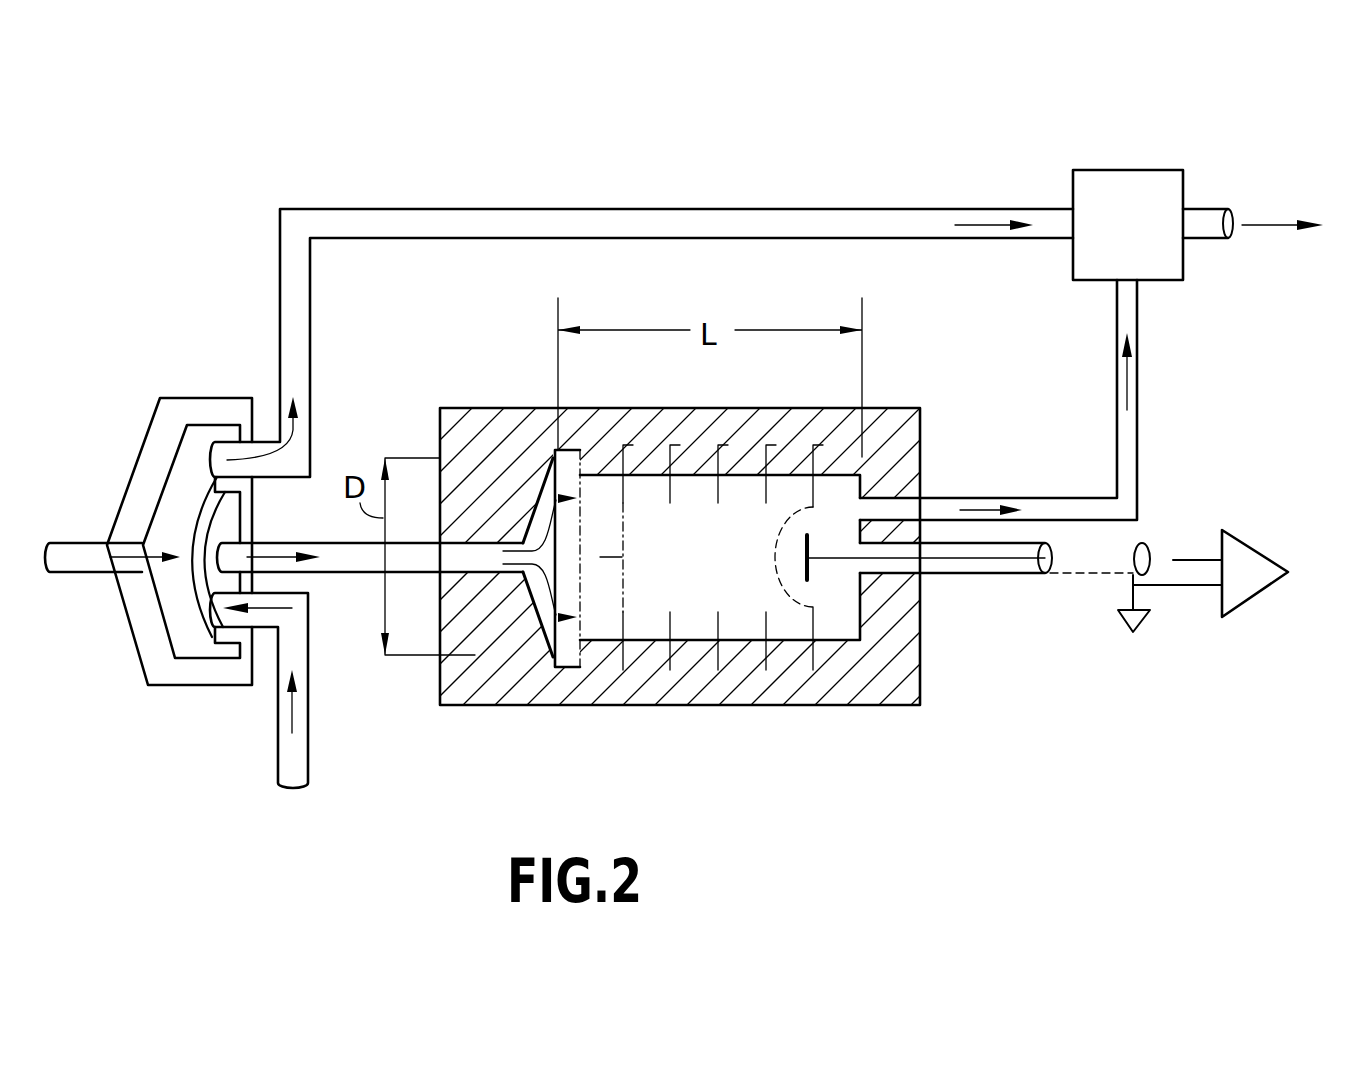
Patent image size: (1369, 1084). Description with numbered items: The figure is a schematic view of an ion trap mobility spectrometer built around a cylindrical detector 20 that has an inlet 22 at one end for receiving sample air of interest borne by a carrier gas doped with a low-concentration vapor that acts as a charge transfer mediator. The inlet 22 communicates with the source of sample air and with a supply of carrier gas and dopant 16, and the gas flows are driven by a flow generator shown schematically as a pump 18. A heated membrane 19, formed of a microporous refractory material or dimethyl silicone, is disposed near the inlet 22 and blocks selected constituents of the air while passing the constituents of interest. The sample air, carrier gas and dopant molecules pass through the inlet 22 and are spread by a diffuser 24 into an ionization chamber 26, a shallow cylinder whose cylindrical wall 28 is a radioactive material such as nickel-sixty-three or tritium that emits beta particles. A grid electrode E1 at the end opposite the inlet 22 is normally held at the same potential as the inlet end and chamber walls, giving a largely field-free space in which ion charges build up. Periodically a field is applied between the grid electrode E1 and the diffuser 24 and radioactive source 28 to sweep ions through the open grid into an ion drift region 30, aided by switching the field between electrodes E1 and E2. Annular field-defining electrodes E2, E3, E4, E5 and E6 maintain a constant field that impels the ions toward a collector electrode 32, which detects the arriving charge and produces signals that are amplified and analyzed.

The supply of carrier gas and dopant 16 is at (277, 752).
The pump 18 is at (1118, 170).
The heated membrane 19 is at (180, 485).
The cylindrical detector 20 is at (350, 340).
The inlet 22 is at (357, 573).
The diffuser 24 is at (530, 578).
The ionization chamber 26 is at (697, 565).
The cylindrical wall of radioactive material 28 is at (553, 703).
The ion drift region 30 is at (733, 630).
The collector electrode 32 is at (808, 537).
The grid electrode E1 is at (598, 445).
The field-defining electrode E2 is at (625, 447).
The field-defining electrode E3 is at (673, 445).
The field-defining electrode E4 is at (720, 445).
The field-defining electrode E5 is at (768, 445).
The field-defining electrode E6 is at (818, 447).